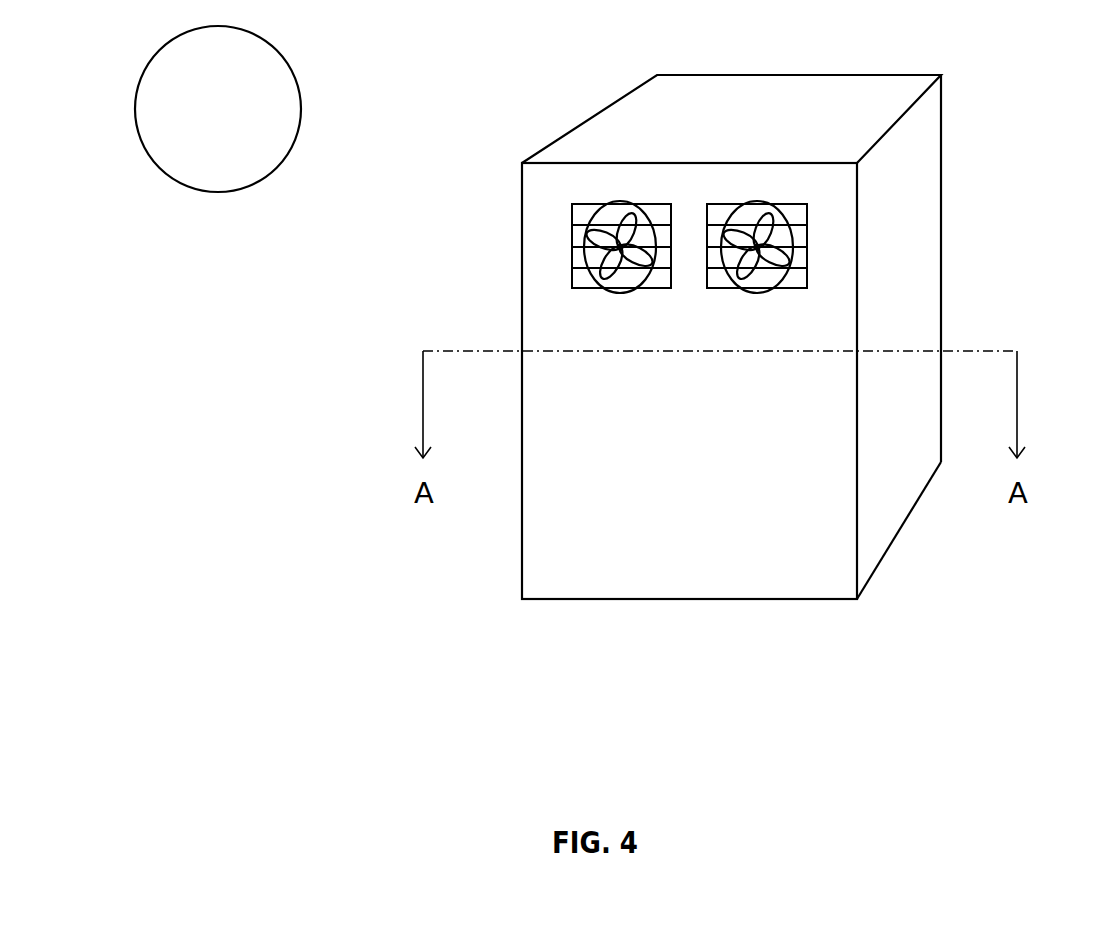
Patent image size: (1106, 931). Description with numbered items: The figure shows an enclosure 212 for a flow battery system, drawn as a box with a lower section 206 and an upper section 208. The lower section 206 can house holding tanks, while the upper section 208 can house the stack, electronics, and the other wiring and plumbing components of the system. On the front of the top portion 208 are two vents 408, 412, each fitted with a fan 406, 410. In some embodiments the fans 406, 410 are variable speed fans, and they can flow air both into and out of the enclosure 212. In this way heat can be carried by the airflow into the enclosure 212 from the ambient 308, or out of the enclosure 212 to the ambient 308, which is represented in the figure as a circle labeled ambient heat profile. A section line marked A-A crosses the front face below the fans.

The ambient 308 is at (163, 108).
The lower section 206 is at (548, 562).
The upper section 208 is at (918, 138).
The enclosure 212 is at (880, 561).
The fan 406 is at (620, 214).
The vent 408 is at (572, 276).
The fan 410 is at (782, 213).
The vent 412 is at (807, 275).